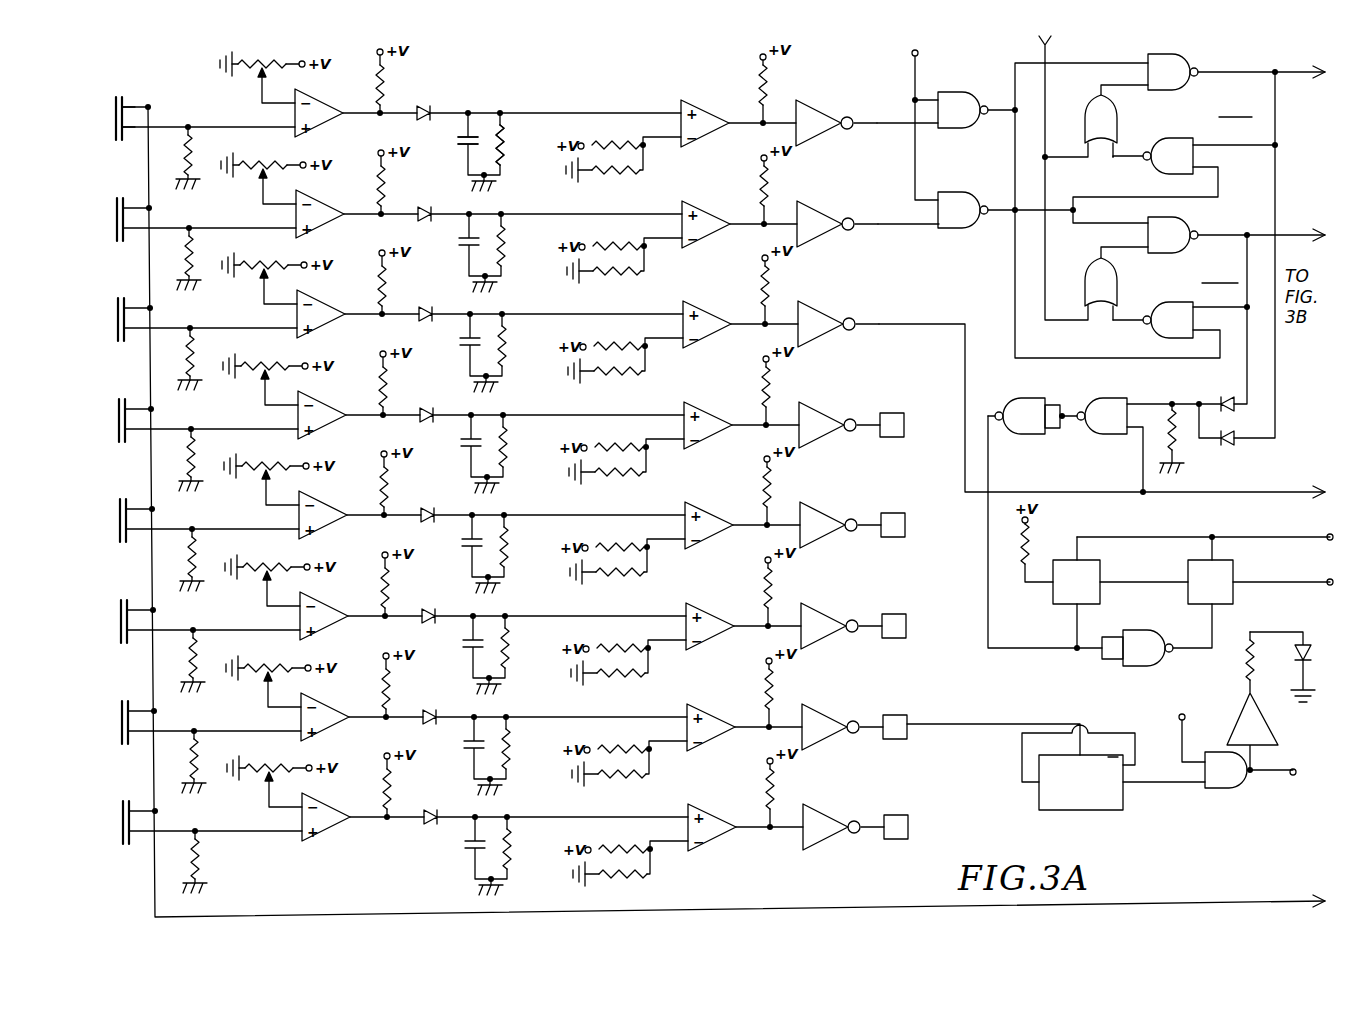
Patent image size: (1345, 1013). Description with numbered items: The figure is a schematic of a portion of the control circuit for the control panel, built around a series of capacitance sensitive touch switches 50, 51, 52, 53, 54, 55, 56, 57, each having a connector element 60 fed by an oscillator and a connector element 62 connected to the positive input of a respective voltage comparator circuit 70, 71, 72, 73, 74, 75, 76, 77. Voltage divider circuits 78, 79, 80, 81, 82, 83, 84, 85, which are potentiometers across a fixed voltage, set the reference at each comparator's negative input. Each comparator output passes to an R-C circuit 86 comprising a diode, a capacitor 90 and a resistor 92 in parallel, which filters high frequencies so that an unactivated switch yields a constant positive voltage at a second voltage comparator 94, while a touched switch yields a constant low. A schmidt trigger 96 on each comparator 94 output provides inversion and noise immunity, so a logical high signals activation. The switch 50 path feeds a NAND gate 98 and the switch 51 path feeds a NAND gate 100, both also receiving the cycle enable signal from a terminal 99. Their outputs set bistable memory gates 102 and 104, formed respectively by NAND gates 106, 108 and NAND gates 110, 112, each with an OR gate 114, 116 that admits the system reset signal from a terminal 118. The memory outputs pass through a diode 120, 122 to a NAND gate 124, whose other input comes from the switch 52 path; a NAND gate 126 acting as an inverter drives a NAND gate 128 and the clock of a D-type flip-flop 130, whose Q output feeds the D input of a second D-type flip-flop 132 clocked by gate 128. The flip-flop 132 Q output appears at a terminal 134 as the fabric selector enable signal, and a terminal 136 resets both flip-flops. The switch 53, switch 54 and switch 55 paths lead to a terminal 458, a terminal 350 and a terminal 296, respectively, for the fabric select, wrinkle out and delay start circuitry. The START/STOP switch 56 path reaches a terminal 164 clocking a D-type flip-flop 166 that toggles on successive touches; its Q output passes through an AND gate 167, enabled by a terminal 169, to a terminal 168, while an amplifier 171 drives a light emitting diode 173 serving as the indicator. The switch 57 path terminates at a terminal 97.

The capacitance touch switch 50 is at (111, 103).
The capacitance touch switch 51 is at (112, 204).
The capacitance touch switch 52 is at (113, 304).
The capacitance touch switch 53 is at (114, 405).
The capacitance touch switch 54 is at (115, 505).
The capacitance touch switch 55 is at (116, 606).
The capacitance touch switch 56 is at (117, 707).
The capacitance touch switch 57 is at (118, 807).
The connector element 60 is at (152, 91).
The connector element 62 is at (130, 148).
The voltage comparator circuit 70 is at (326, 112).
The voltage comparator circuit 71 is at (327, 213).
The voltage comparator circuit 72 is at (328, 313).
The voltage comparator circuit 73 is at (329, 414).
The voltage comparator circuit 74 is at (330, 514).
The voltage comparator circuit 75 is at (331, 615).
The voltage comparator circuit 76 is at (332, 716).
The voltage comparator circuit 77 is at (333, 816).
The voltage divider circuit 78 is at (276, 70).
The voltage divider circuit 79 is at (277, 171).
The voltage divider circuit 80 is at (278, 271).
The voltage divider circuit 81 is at (279, 372).
The voltage divider circuit 82 is at (280, 472).
The voltage divider circuit 83 is at (281, 573).
The voltage divider circuit 84 is at (282, 674).
The voltage divider circuit 85 is at (283, 774).
The R-C circuit 86 is at (474, 493).
The capacitor 90 is at (455, 152).
The resistor 92 is at (520, 146).
The voltage comparator 94 is at (712, 471).
The schmidt trigger 96 is at (828, 470).
The output line 97 is at (910, 815).
The NAND gate 98 is at (955, 95).
The terminal 99 is at (918, 55).
The NAND gate 100 is at (955, 196).
The bistable memory gate 102 is at (1237, 107).
The bistable memory gate 104 is at (1220, 273).
The NAND gate 106 is at (1170, 58).
The NAND gate 108 is at (1183, 140).
The NAND gate 110 is at (1185, 227).
The NAND gate 112 is at (1175, 303).
The OR gate 114 is at (1094, 117).
The OR gate 116 is at (1092, 278).
The terminal 118 is at (1050, 44).
The diode 120 is at (1226, 447).
The diode 122 is at (1231, 396).
The NAND gate 124 is at (1100, 398).
The NAND gate 126 is at (1022, 398).
The NAND gate 128 is at (1148, 664).
The D-type flip-flop 130 is at (1058, 606).
The D-type flip-flop 132 is at (1230, 606).
The terminal 134 is at (1330, 579).
The terminal 136 is at (1330, 534).
The terminal 164 is at (915, 715).
The D-type flip-flop 166 is at (1082, 803).
The AND gate 167 is at (1218, 788).
The terminal 168 is at (1293, 769).
The terminal 169 is at (1183, 714).
The amplifier 171 is at (1242, 712).
The light emitting diode 173 is at (1306, 643).
The terminal 296 is at (914, 614).
The terminal 350 is at (913, 513).
The terminal 458 is at (912, 413).